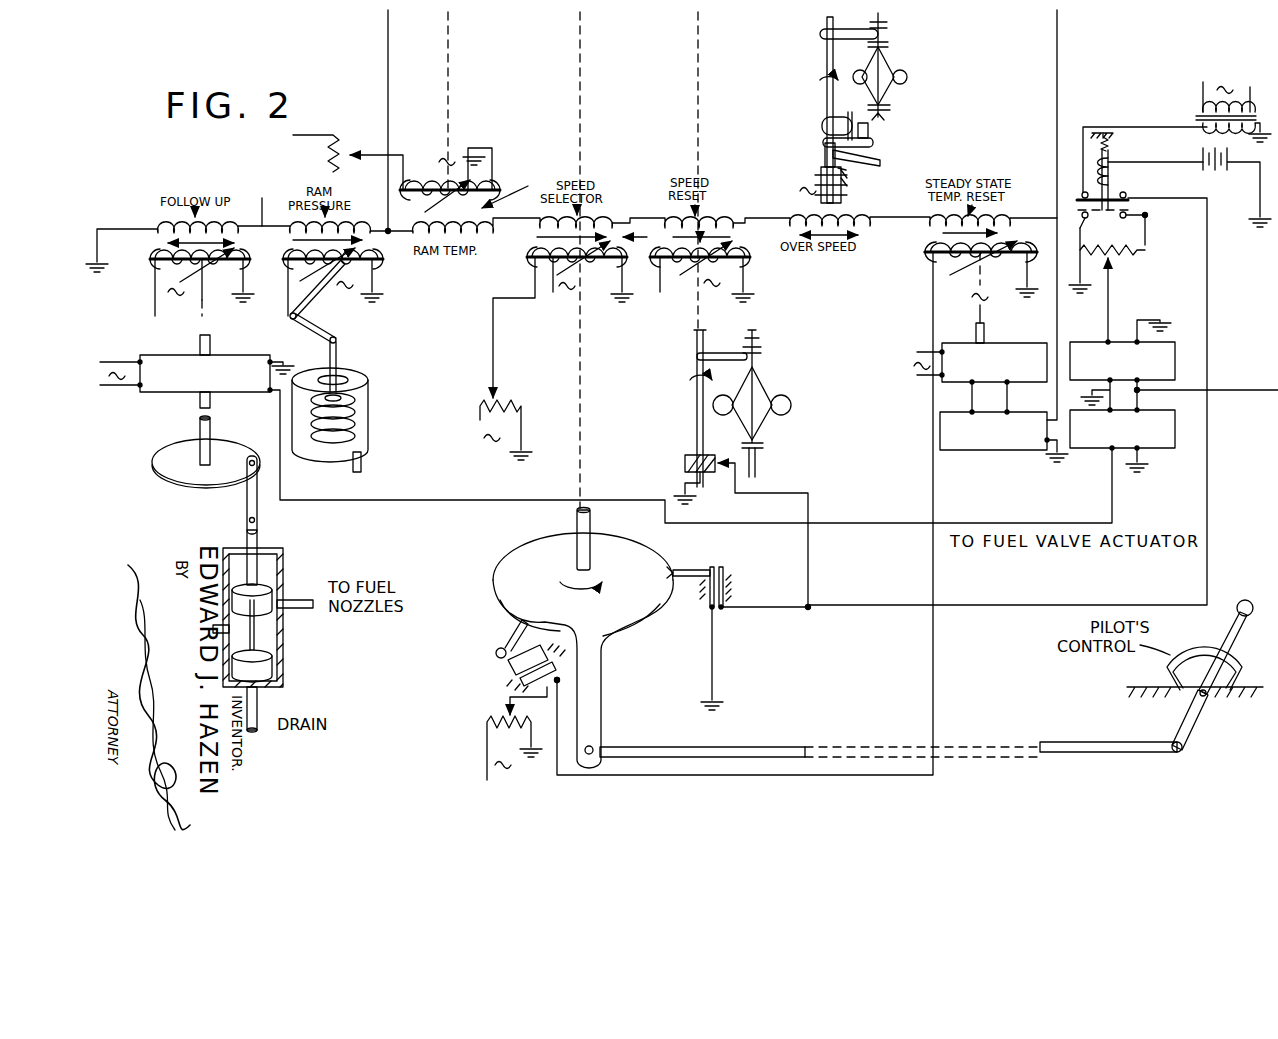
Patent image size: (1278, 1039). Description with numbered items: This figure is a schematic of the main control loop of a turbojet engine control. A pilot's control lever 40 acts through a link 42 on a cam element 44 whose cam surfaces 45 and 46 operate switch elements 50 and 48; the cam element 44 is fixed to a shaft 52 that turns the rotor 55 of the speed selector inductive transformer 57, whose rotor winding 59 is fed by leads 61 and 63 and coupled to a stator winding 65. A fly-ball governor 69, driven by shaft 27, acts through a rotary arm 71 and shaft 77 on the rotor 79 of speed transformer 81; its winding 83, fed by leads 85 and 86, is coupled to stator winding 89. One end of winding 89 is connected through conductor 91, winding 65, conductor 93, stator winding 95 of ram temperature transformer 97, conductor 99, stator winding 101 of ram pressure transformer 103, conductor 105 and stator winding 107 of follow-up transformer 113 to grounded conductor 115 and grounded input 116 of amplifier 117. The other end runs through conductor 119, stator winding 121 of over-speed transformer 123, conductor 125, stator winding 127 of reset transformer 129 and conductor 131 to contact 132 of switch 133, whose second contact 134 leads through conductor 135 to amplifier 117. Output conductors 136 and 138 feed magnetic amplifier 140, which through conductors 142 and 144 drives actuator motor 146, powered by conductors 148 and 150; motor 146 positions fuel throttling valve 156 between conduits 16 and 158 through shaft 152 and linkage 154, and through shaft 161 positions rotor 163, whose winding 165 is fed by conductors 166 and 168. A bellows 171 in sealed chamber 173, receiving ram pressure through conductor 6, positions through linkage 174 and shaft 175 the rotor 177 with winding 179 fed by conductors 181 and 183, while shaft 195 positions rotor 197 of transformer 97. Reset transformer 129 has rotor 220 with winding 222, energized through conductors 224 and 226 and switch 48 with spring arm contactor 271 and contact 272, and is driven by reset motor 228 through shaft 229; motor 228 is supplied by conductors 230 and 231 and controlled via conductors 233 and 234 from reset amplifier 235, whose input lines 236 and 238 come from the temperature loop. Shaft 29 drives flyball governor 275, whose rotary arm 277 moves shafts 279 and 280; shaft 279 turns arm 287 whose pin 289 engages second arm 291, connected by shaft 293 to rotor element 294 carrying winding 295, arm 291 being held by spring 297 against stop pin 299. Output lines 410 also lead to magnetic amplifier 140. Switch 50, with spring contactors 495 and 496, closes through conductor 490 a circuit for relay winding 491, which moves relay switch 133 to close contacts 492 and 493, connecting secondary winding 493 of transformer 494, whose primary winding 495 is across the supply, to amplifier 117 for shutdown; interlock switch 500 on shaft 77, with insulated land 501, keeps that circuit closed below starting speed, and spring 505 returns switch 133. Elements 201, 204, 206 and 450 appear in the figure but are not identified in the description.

The conductor 6 is at (362, 465).
The fuel conduit 16 is at (298, 612).
The shaft 27 is at (760, 465).
The shaft 29 is at (886, 115).
The pilot's control lever 40 is at (1232, 640).
The link 42 is at (695, 748).
The cam element 44 is at (557, 577).
The cam surface 45 is at (683, 580).
The cam surface 46 is at (507, 620).
The switch 48 is at (505, 670).
The switch element 50 is at (729, 572).
The shaft 52 is at (583, 49).
The rotor 55 is at (527, 262).
The inductive transformer 57 is at (676, 240).
The rotor winding 59 is at (553, 292).
The lead 61 is at (495, 350).
The lead 63 is at (622, 282).
The stator winding 65 is at (559, 238).
The fly-ball governor 69 is at (784, 398).
The rotary arm 71 is at (720, 356).
The shaft 77 is at (696, 49).
The rotor 79 is at (660, 280).
The speed responsive variable coupling transformer 81 is at (749, 246).
The rotor winding 83 is at (690, 265).
The lead 85 is at (663, 292).
The lead 86 is at (748, 283).
The stator winding 89 is at (667, 218).
The conductor 91 is at (633, 212).
The conductor 93 is at (493, 215).
The stator winding 95 is at (437, 226).
The ram temperature responsive variable coupling transformer 97 is at (517, 186).
The conductor 99 is at (389, 239).
The stator winding 101 is at (292, 237).
The ram air inlet pressure responsive variable coupling transformer 103 is at (381, 262).
The conductor 105 is at (260, 202).
The stator winding 107 is at (170, 226).
The speed follow-up variable coupling transformer 113 is at (160, 244).
The grounded conductor 115 is at (97, 229).
The grounded input 116 is at (1137, 323).
The amplifier 117 is at (1175, 344).
The conductor 119 is at (757, 218).
The stator winding 121 is at (797, 223).
The over-speed responsive transformer 123 is at (840, 213).
The conductor 125 is at (878, 218).
The stator winding 127 is at (935, 223).
The steady state temperature reset transformer 129 is at (927, 242).
The conductor 131 is at (1042, 219).
The contact 132 is at (1079, 258).
The relay switch 133 is at (1075, 199).
The second contact 134 is at (1112, 239).
The conductor 135 is at (1110, 298).
The output conductor 136 is at (1115, 395).
The output conductor 138 is at (1143, 393).
The magnetic amplifier 140 is at (1175, 432).
The output conductor 142 is at (283, 358).
The output conductor 144 is at (1115, 515).
The actuator motor 146 is at (212, 356).
The conductor 148 is at (142, 360).
The conductor 150 is at (135, 386).
The shaft 152 is at (200, 432).
The linkage 154 is at (258, 510).
The fuel throttling valve 156 is at (288, 585).
The fuel conduit 158 is at (275, 650).
The shaft 161 is at (202, 320).
The rotor 163 is at (152, 266).
The rotor winding 165 is at (204, 263).
The conductor 166 is at (155, 300).
The conductor 168 is at (203, 302).
The bellows 171 is at (358, 400).
The sealed chamber 173 is at (370, 427).
The linkage 174 is at (338, 342).
The shaft 175 is at (312, 306).
The rotor 177 is at (285, 265).
The rotor winding 179 is at (352, 268).
The conductor 181 is at (295, 300).
The conductor 183 is at (380, 298).
The shaft 195 is at (448, 70).
The rotor 197 is at (500, 186).
The potentiometer 201 is at (440, 189).
The resistor 204 is at (403, 155).
The voltage source 206 is at (478, 148).
The rotor 220 is at (932, 256).
The rotor winding 222 is at (965, 260).
The conductor 224 is at (1027, 277).
The conductor 226 is at (933, 460).
The reset motor and gear train assembly 228 is at (1040, 344).
The shaft 229 is at (978, 335).
The conductor 230 is at (918, 351).
The conductor 231 is at (920, 378).
The conductor 233 is at (972, 398).
The conductor 234 is at (1007, 398).
The reset amplifier 235 is at (992, 450).
The input line 236 is at (1058, 65).
The input line 238 is at (1055, 452).
The spring arm contactor 271 is at (495, 650).
The contact 272 is at (530, 655).
The flyball governor 275 is at (913, 66).
The rotary arm 277 is at (830, 38).
The shaft 279 is at (825, 70).
The shaft 280 is at (828, 22).
The arm 287 is at (824, 124).
The pin 289 is at (822, 137).
The second arm 291 is at (866, 142).
The shaft 293 is at (825, 155).
The rotor element 294 is at (842, 176).
The winding 295 is at (820, 180).
The spring 297 is at (858, 152).
The stop pin 299 is at (870, 132).
The output lines 410 is at (1225, 390).
The conductor 450 is at (388, 58).
The conductor 490 is at (1047, 604).
The relay winding 491 is at (1112, 172).
The contact 492 is at (1080, 191).
The contact and secondary winding 493 is at (1200, 117).
The transformer 494 is at (1250, 104).
The primary winding 495 is at (707, 570).
The spring contactor 496 is at (725, 583).
The speed sensitive interlock switch 500 is at (712, 472).
The insulated land 501 is at (688, 456).
The spring 505 is at (1108, 145).